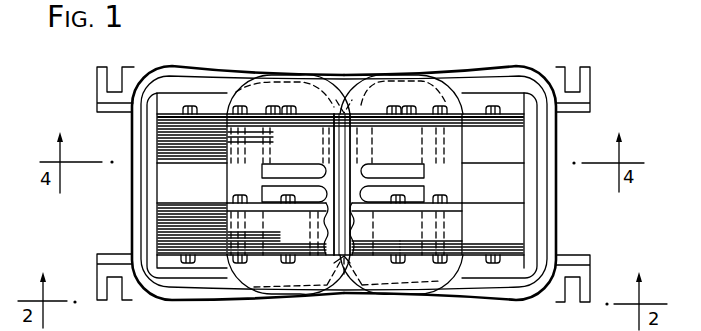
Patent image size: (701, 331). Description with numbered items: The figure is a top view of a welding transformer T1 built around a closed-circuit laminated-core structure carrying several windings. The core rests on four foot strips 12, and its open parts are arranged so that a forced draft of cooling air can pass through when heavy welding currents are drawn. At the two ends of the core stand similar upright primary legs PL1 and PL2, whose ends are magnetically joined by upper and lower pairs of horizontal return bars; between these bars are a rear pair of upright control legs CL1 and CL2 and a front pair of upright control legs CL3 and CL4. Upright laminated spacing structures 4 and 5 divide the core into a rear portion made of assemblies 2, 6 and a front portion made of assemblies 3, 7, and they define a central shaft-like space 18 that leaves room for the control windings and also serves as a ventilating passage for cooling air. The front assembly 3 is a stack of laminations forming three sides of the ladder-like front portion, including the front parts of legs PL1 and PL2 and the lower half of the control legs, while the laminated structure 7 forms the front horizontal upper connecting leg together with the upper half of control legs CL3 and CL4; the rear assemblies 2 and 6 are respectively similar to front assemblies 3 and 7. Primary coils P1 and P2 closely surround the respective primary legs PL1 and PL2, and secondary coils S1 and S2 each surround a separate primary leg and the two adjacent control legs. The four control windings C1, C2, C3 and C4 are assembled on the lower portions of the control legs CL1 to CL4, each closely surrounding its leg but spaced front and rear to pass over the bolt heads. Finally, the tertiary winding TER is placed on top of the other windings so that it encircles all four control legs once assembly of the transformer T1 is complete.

The rear portion assembly 2 is at (216, 110).
The front portion assembly 3 is at (214, 250).
The upright laminated spacing structure 4 is at (168, 177).
The upright laminated spacing structure 5 is at (517, 172).
The rear portion assembly 6 is at (389, 106).
The front upper connecting leg structure 7 is at (384, 249).
The foot strip 12 is at (97, 89).
The central shaft-like space 18 is at (358, 174).
The rear upright control leg CL1 is at (257, 120).
The rear upright control leg CL2 is at (414, 121).
The front upright control leg CL3 is at (277, 246).
The front upright control leg CL4 is at (414, 251).
The control winding C1 is at (314, 172).
The control winding C2 is at (373, 170).
The control winding C3 is at (313, 200).
The control winding C4 is at (368, 197).
The tertiary winding TER is at (344, 90).
The welding transformer T1 is at (532, 56).
The primary coil P1 is at (147, 128).
The primary coil P2 is at (536, 128).
The secondary coil S1 is at (133, 147).
The secondary coil S2 is at (556, 147).
The upright primary leg PL1 is at (163, 217).
The upright primary leg PL2 is at (512, 225).